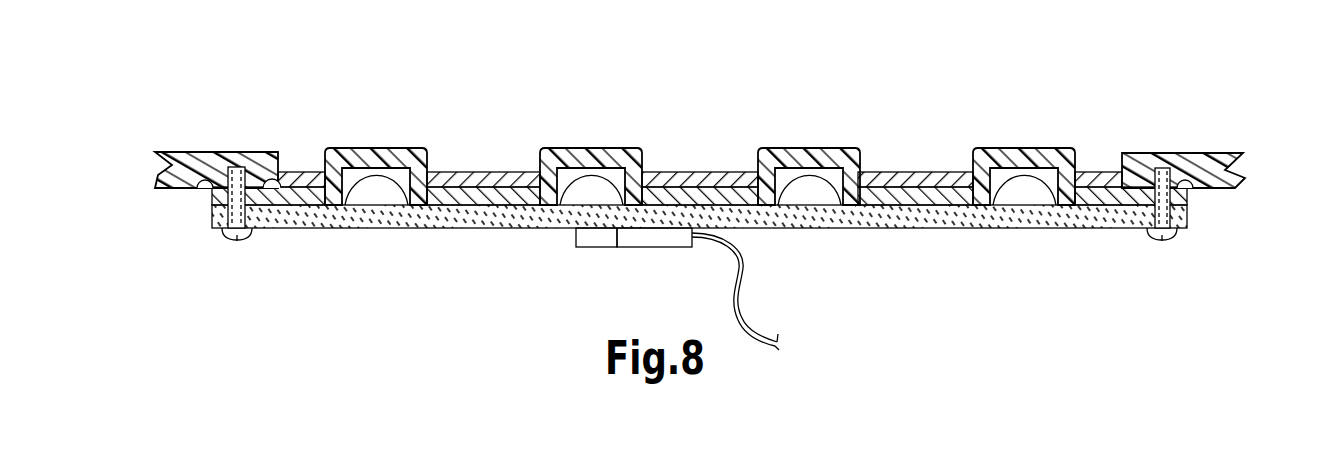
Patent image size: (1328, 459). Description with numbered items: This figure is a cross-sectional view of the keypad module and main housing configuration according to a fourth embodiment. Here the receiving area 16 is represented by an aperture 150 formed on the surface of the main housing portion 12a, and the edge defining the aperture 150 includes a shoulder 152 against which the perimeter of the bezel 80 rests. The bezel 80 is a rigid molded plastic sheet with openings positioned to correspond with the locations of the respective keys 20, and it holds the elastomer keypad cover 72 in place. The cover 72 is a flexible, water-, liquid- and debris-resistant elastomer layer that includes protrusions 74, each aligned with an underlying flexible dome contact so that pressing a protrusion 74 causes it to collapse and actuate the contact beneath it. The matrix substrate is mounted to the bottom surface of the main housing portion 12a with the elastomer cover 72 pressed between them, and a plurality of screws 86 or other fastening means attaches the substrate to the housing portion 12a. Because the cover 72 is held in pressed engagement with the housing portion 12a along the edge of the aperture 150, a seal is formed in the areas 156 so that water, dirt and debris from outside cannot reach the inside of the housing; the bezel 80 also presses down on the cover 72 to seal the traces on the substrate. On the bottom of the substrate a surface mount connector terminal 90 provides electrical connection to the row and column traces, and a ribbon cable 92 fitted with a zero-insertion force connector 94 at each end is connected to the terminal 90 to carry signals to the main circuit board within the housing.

The receiving area 16 is at (125, 212).
The keys 20 is at (333, 110).
The aperture 150 is at (1085, 108).
The main housing portion 12a is at (192, 162).
The shoulder 152 is at (297, 172).
The keypad cover 72 is at (517, 172).
The protrusions 74 is at (427, 158).
The bezel 80 is at (920, 172).
The seal areas 156 is at (205, 187).
The screws 86 is at (240, 240).
The surface mount connector terminal 90 is at (592, 238).
The zero-insertion force connector 94 is at (640, 238).
The ribbon cable 92 is at (747, 262).